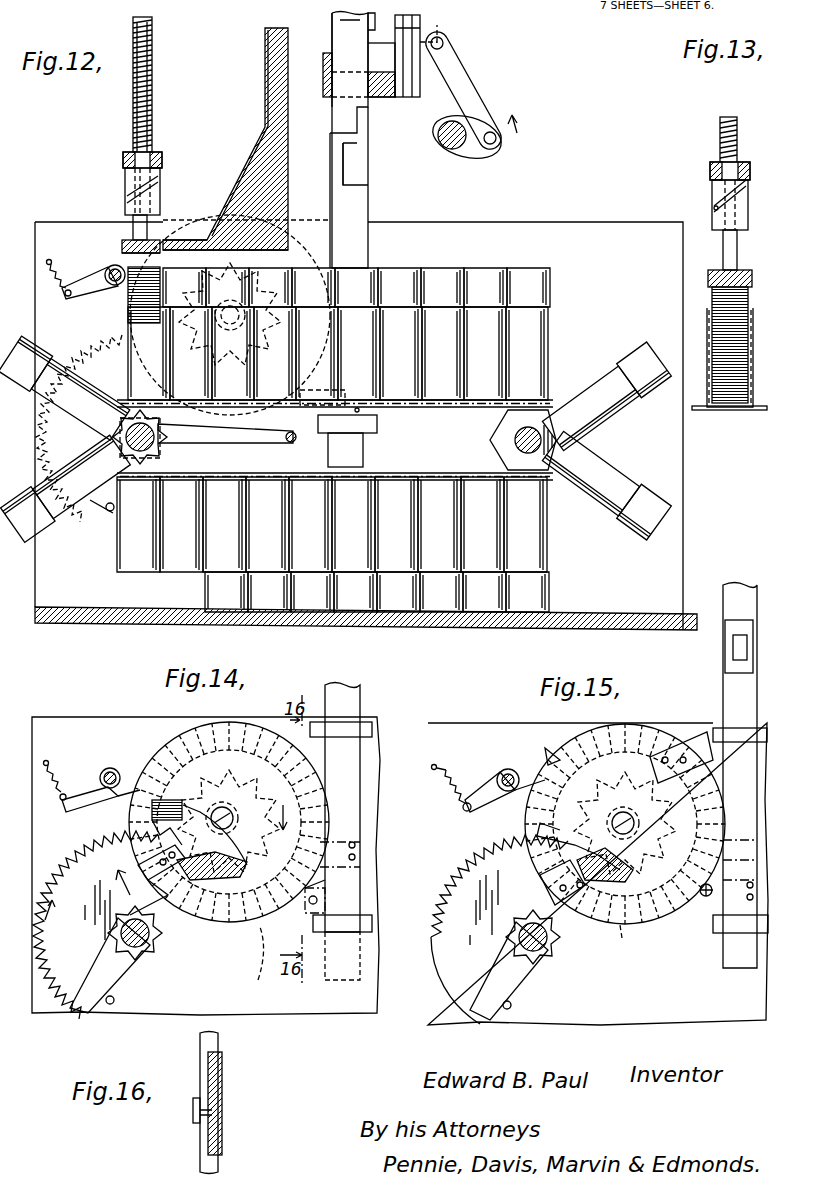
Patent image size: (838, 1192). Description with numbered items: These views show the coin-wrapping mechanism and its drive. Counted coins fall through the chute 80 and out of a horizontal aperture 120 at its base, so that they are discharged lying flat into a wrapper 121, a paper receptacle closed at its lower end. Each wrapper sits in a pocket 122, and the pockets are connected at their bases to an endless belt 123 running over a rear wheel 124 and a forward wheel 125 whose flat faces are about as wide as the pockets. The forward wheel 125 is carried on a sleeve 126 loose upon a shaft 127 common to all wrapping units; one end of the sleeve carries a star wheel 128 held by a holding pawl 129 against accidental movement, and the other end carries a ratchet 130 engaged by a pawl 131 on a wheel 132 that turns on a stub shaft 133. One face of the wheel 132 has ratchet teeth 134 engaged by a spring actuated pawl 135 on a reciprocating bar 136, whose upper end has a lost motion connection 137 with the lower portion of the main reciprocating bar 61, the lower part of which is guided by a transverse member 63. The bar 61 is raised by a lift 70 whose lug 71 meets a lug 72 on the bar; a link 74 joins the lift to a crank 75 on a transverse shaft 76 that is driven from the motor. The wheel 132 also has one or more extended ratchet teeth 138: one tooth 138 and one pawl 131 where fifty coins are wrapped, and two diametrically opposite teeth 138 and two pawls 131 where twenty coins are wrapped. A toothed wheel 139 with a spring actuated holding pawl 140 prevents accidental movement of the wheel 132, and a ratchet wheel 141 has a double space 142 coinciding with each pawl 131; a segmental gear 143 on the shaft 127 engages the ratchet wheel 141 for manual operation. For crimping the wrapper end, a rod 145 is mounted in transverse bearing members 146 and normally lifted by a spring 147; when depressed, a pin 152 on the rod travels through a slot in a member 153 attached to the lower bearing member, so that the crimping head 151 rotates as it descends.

In FIG. 12, the reciprocating bar 61 is at (368, 117).
In FIG. 12, the transverse member 63 is at (323, 75).
In FIG. 12, the lift 70 is at (412, 72).
In FIG. 12, the lug 71 is at (368, 26).
In FIG. 12, the lug 72 is at (381, 55).
In FIG. 12, the link 74 is at (468, 86).
In FIG. 12, the crank 75 is at (478, 152).
In FIG. 12, the transverse shaft 76 is at (451, 149).
In FIG. 12, the chute 80 is at (265, 53).
In FIG. 12, the horizontal aperture 120 is at (181, 252).
In FIG. 12, the wrapper 121 is at (135, 290).
In FIG. 13, the wrapper 121 is at (712, 298).
In FIG. 12, the pocket 122 is at (563, 392).
In FIG. 13, the pocket 122 is at (708, 345).
In FIG. 12, the endless belt 123 is at (396, 406).
In FIG. 13, the endless belt 123 is at (696, 410).
In FIG. 12, the rear wheel 124 is at (490, 440).
In FIG. 12, the forward wheel 125 is at (162, 446).
In FIG. 12, the sleeve 126 is at (157, 433).
In FIG. 14, the sleeve 126 is at (160, 948).
In FIG. 15, the sleeve 126 is at (556, 941).
In FIG. 12, the shaft 127 is at (167, 438).
In FIG. 14, the shaft 127 is at (106, 961).
In FIG. 15, the shaft 127 is at (516, 958).
In FIG. 12, the star wheel 128 is at (96, 516).
In FIG. 12, the holding pawl 129 is at (268, 437).
In FIG. 12, the ratchet 130 is at (108, 454).
In FIG. 14, the ratchet 130 is at (150, 950).
In FIG. 15, the ratchet 130 is at (550, 955).
In FIG. 14, the pawl 131 is at (170, 920).
In FIG. 15, the pawl 131 is at (690, 737).
In FIG. 12, the wheel 132 is at (291, 242).
In FIG. 14, the wheel 132 is at (238, 925).
In FIG. 15, the wheel 132 is at (656, 920).
In FIG. 14, the stub shaft 133 is at (233, 815).
In FIG. 15, the stub shaft 133 is at (633, 820).
In FIG. 14, the ratchet teeth 134 is at (257, 961).
In FIG. 15, the ratchet teeth 134 is at (629, 940).
In FIG. 16, the ratchet teeth 134 is at (222, 1071).
In FIG. 12, the spring actuated pawl 135 is at (318, 432).
In FIG. 14, the spring actuated pawl 135 is at (340, 878).
In FIG. 15, the spring actuated pawl 135 is at (722, 933).
In FIG. 16, the spring actuated pawl 135 is at (205, 1111).
In FIG. 12, the reciprocating bar 136 is at (360, 205).
In FIG. 14, the reciprocating bar 136 is at (348, 805).
In FIG. 15, the reciprocating bar 136 is at (725, 697).
In FIG. 16, the reciprocating bar 136 is at (210, 1038).
In FIG. 12, the lost motion connection 137 is at (355, 138).
In FIG. 15, the lost motion connection 137 is at (728, 628).
In FIG. 12, the extended ratchet tooth 138 is at (280, 352).
In FIG. 14, the extended ratchet tooth 138 is at (305, 900).
In FIG. 15, the extended ratchet tooth 138 is at (555, 755).
In FIG. 14, the toothed wheel 139 is at (150, 815).
In FIG. 15, the toothed wheel 139 is at (526, 822).
In FIG. 12, the holding pawl 140 is at (98, 282).
In FIG. 14, the holding pawl 140 is at (82, 782).
In FIG. 15, the holding pawl 140 is at (512, 768).
In FIG. 12, the ratchet wheel 141 is at (231, 322).
In FIG. 14, the ratchet wheel 141 is at (190, 815).
In FIG. 15, the ratchet wheel 141 is at (606, 860).
In FIG. 14, the double space 142 is at (192, 861).
In FIG. 15, the double space 142 is at (599, 845).
In FIG. 12, the segmental gear 143 is at (118, 340).
In FIG. 14, the segmental gear 143 is at (86, 843).
In FIG. 15, the segmental gear 143 is at (470, 875).
In FIG. 12, the rod 145 is at (150, 66).
In FIG. 13, the rod 145 is at (722, 118).
In FIG. 12, the transverse bearing member 146 is at (161, 154).
In FIG. 13, the transverse bearing member 146 is at (730, 171).
In FIG. 12, the spring 147 is at (149, 96).
In FIG. 13, the spring 147 is at (720, 150).
In FIG. 12, the crimping head 151 is at (122, 246).
In FIG. 13, the crimping head 151 is at (716, 270).
In FIG. 12, the pin 152 is at (152, 186).
In FIG. 13, the pin 152 is at (714, 207).
In FIG. 12, the slotted member 153 is at (114, 184).
In FIG. 13, the slotted member 153 is at (712, 215).